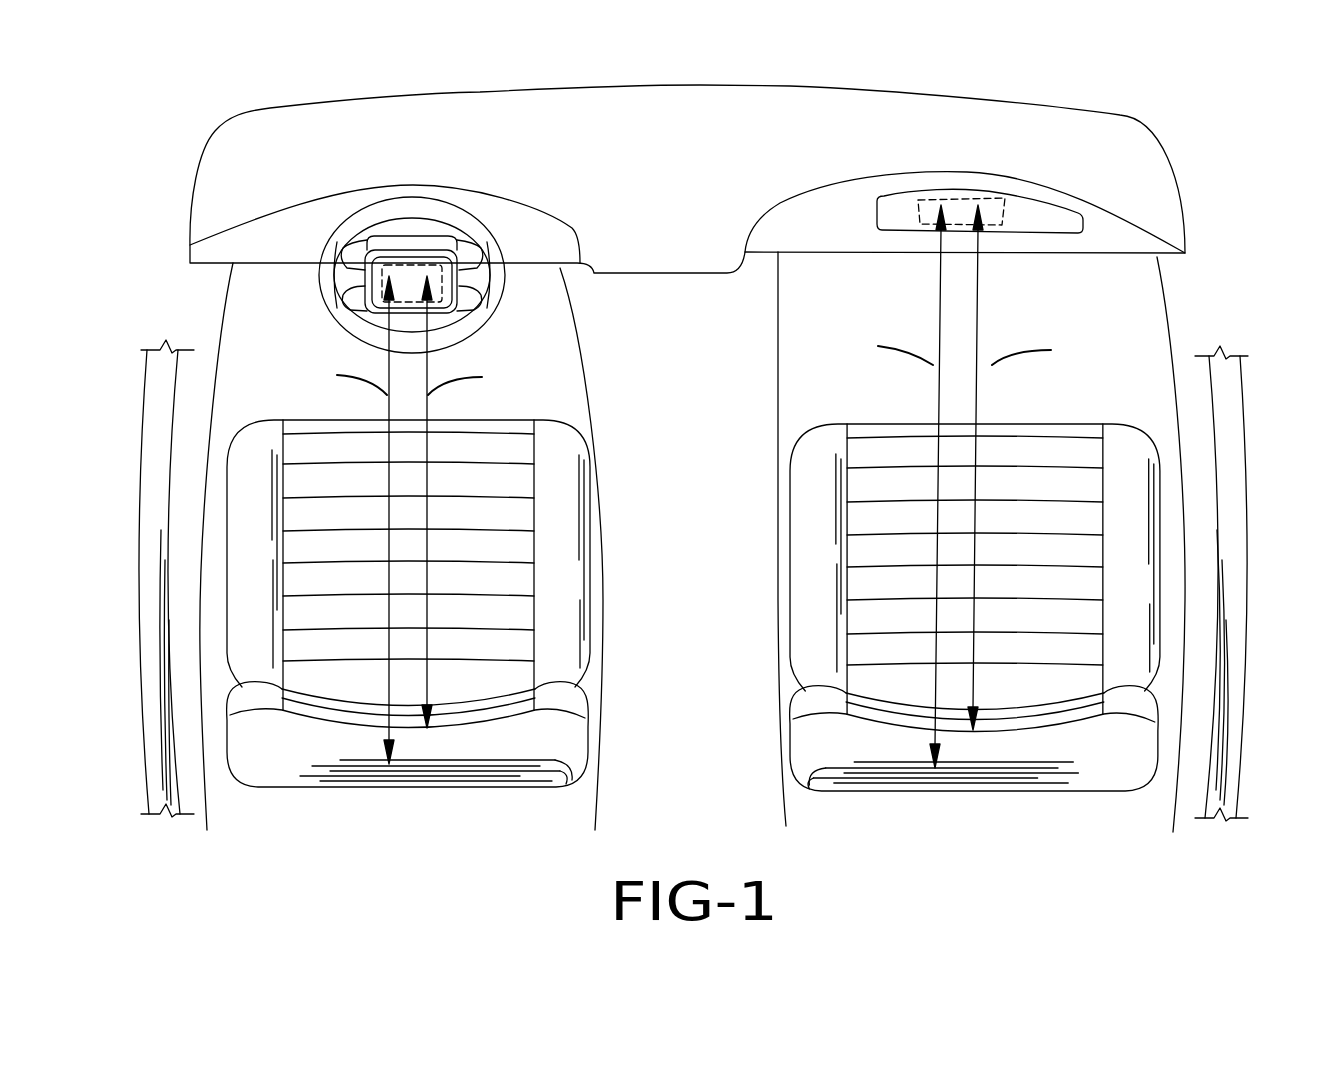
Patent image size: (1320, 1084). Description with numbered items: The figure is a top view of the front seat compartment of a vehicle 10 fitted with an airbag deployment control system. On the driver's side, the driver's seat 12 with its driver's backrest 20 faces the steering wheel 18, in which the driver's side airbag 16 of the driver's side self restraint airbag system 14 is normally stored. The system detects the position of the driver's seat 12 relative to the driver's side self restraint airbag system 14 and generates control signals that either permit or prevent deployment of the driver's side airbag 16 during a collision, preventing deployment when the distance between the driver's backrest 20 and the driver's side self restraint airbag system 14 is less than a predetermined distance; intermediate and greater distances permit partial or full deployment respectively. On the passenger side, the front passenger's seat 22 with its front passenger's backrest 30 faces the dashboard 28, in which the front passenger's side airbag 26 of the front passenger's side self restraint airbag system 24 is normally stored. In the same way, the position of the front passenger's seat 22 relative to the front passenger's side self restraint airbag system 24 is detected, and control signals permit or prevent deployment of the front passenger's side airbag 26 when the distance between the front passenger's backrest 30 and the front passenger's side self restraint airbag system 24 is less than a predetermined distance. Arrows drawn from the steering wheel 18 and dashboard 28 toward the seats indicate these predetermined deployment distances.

The vehicle 10 is at (1266, 170).
The driver's seat 12 is at (213, 583).
The driver's side self restraint airbag system 14 is at (347, 278).
The driver's side airbag 16 is at (417, 263).
The steering wheel 18 is at (356, 203).
The driver's backrest 20 is at (318, 750).
The front passenger's seat 22 is at (1175, 589).
The front passenger's side self restraint airbag system 24 is at (1037, 182).
The front passenger's side airbag 26 is at (933, 197).
The dashboard 28 is at (1150, 238).
The front passenger's backrest 30 is at (975, 633).